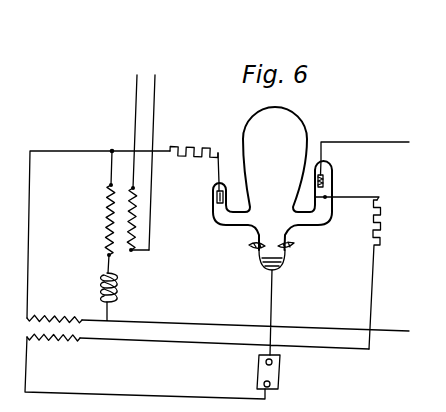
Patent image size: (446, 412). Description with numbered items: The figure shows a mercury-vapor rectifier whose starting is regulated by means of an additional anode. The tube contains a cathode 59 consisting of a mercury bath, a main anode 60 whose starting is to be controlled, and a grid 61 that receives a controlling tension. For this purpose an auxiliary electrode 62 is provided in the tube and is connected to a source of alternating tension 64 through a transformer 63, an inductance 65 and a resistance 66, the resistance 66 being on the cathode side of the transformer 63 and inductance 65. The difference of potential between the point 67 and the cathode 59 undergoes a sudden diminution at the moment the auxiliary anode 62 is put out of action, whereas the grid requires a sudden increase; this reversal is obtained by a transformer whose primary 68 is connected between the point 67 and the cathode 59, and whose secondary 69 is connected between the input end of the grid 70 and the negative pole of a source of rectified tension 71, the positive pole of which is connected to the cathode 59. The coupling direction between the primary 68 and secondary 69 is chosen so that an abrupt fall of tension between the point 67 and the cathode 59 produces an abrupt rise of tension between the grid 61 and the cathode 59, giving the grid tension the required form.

The cathode 59 is at (266, 270).
The main anode 60 is at (323, 180).
The grid 61 is at (333, 207).
The auxiliary electrode 62 is at (214, 197).
The transformer 63 is at (122, 223).
The source of alternating tension 64 is at (155, 94).
The inductance 65 is at (115, 284).
The resistance 66 is at (186, 148).
The point 67 is at (113, 154).
The primary 68 is at (52, 316).
The secondary 69 is at (53, 352).
The input end of the grid 70 is at (380, 207).
The source of rectified tension 71 is at (273, 372).